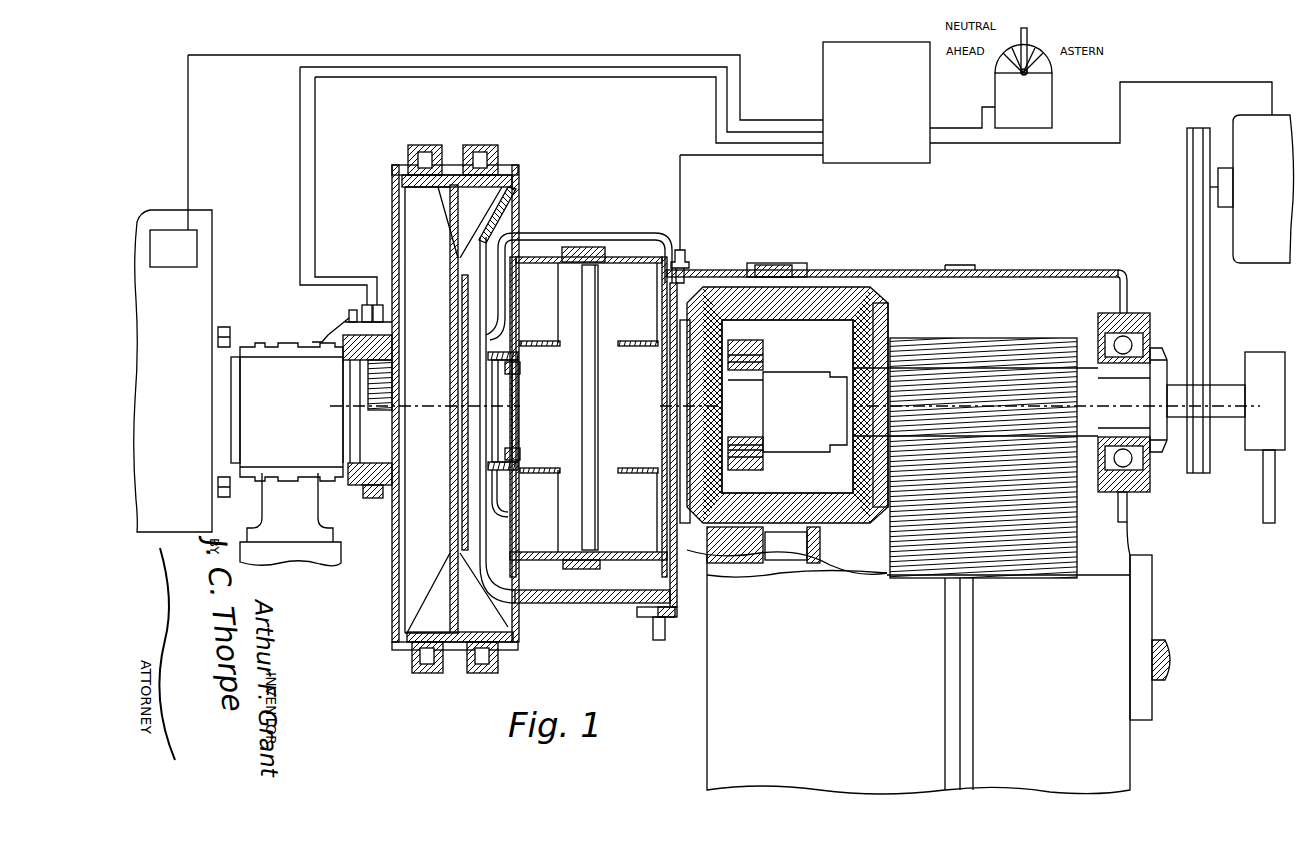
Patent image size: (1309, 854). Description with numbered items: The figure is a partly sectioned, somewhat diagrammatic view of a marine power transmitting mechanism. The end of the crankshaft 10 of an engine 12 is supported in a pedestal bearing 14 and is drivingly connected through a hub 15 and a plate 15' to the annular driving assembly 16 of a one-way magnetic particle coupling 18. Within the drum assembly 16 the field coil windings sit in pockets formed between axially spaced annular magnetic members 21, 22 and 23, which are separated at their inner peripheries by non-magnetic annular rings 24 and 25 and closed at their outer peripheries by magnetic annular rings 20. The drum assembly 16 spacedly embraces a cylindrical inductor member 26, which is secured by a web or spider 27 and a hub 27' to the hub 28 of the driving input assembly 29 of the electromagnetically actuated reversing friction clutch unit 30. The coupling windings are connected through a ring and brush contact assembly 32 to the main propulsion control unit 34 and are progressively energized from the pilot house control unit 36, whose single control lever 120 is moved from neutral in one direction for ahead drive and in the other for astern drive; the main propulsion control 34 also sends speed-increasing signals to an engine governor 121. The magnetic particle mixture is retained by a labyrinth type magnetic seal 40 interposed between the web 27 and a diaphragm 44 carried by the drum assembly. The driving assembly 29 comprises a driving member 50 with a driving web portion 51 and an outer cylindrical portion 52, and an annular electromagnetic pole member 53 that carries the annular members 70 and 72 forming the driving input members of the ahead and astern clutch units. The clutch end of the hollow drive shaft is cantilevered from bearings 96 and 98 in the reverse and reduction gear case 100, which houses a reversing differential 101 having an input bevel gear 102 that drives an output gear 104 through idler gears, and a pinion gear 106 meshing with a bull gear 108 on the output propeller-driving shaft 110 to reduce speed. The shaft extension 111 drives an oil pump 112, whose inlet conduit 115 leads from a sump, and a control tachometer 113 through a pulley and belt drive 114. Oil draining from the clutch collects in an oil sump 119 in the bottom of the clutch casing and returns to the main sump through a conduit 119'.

The crankshaft 10 is at (230, 368).
The engine 12 is at (193, 298).
The pedestal bearing 14 is at (265, 468).
The hub 15 is at (389, 411).
The plate 15' is at (425, 578).
The annular driving assembly 16 is at (517, 177).
The one-way magnetic particle coupling 18 is at (390, 208).
The magnetic annular rings 20 is at (468, 143).
The annular magnetic member 21 is at (410, 648).
The annular magnetic member 22 is at (455, 650).
The annular magnetic member 23 is at (500, 655).
The non-magnetic annular ring 24 is at (438, 187).
The non-magnetic annular ring 25 is at (498, 190).
The cylindrical inductor member 26 is at (508, 190).
The web or spider 27 is at (437, 409).
The hub 27' is at (522, 367).
The hub 28 is at (513, 460).
The driving input assembly 29 is at (577, 245).
The electromagnetically actuated reversing friction clutch unit 30 is at (632, 233).
The ring and brush contact assembly 32 is at (350, 312).
The main propulsion control unit 34 is at (897, 150).
The pilot house control unit 36 is at (1048, 67).
The labyrinth type magnetic seal 40 is at (462, 433).
The diaphragm 44 is at (487, 240).
The driving member 50 is at (560, 555).
The driving web portion 51 is at (515, 519).
The outer cylindrical portion 52 is at (555, 268).
The annular electromagnetic pole member 53 is at (583, 568).
The annular member 70 is at (595, 407).
The annular member 72 is at (582, 407).
The bearing 96 is at (760, 357).
The bearing 98 is at (1145, 330).
The reverse and reduction gear case 100 is at (1033, 270).
The reversing differential 101 is at (728, 285).
The input bevel gear 102 is at (723, 485).
The output gear 104 is at (880, 312).
The pinion gear 106 is at (1040, 342).
The bull gear 108 is at (1025, 567).
The output propeller-driving shaft 110 is at (1163, 605).
The shaft extension 111 is at (1228, 415).
The oil pump 112 is at (1273, 355).
The control tachometer 113 is at (1253, 125).
The pulley and belt drive 114 is at (1202, 283).
The conduit 115 is at (1262, 492).
The oil sump 119 is at (592, 610).
The conduit 119' is at (642, 632).
The control lever 120 is at (1028, 30).
The engine governor 121 is at (185, 250).